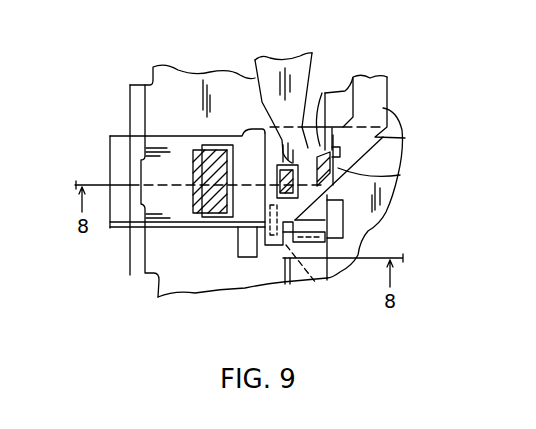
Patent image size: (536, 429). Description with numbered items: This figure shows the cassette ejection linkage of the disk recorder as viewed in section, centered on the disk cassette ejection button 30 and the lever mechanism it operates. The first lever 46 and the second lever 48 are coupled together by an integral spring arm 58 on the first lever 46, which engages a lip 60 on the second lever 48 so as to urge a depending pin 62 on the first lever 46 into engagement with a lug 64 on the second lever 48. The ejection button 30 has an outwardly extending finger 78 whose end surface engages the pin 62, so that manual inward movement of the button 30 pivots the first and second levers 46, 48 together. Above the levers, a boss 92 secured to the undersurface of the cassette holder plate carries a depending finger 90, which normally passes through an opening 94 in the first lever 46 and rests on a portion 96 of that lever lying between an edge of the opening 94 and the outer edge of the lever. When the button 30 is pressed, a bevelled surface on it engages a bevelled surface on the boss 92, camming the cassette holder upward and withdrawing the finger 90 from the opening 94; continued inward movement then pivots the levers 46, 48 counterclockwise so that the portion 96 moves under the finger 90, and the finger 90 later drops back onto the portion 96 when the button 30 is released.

The disk cassette ejection button 30 is at (109, 152).
The first lever 46 is at (297, 63).
The second lever 48 is at (405, 138).
The spring arm 58 is at (383, 175).
The lip 60 is at (320, 97).
The depending pin 62 is at (270, 235).
The lug 64 is at (313, 277).
The outwardly extending finger 78 is at (256, 262).
The depending finger 90 is at (263, 108).
The boss 92 is at (209, 198).
The opening 94 is at (276, 184).
The portion 96 is at (243, 214).